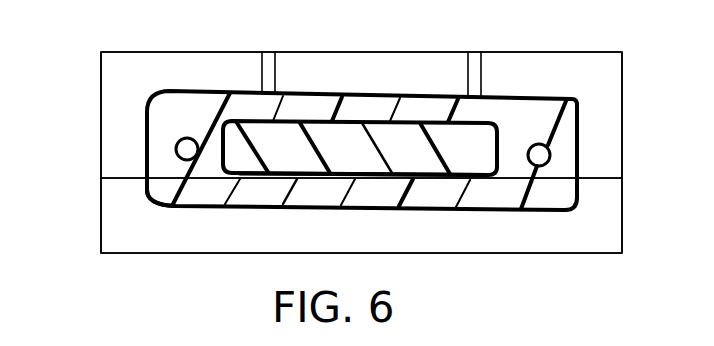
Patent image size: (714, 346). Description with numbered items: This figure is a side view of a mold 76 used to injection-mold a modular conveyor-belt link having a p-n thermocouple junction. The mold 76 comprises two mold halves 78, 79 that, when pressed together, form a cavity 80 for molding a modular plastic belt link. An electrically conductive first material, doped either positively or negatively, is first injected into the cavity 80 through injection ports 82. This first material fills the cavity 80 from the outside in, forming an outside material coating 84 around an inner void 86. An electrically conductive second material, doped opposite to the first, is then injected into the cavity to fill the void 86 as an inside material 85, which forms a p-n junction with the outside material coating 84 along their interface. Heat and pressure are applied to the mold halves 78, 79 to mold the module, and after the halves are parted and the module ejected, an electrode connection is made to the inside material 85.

The mold 76 is at (597, 52).
The mold half 78 is at (614, 117).
The mold half 79 is at (614, 208).
The cavity 80 is at (159, 180).
The injection ports 82 is at (268, 74).
The outside material coating 84 is at (485, 198).
The inside material 85 is at (427, 170).
The inner void 86 is at (257, 166).